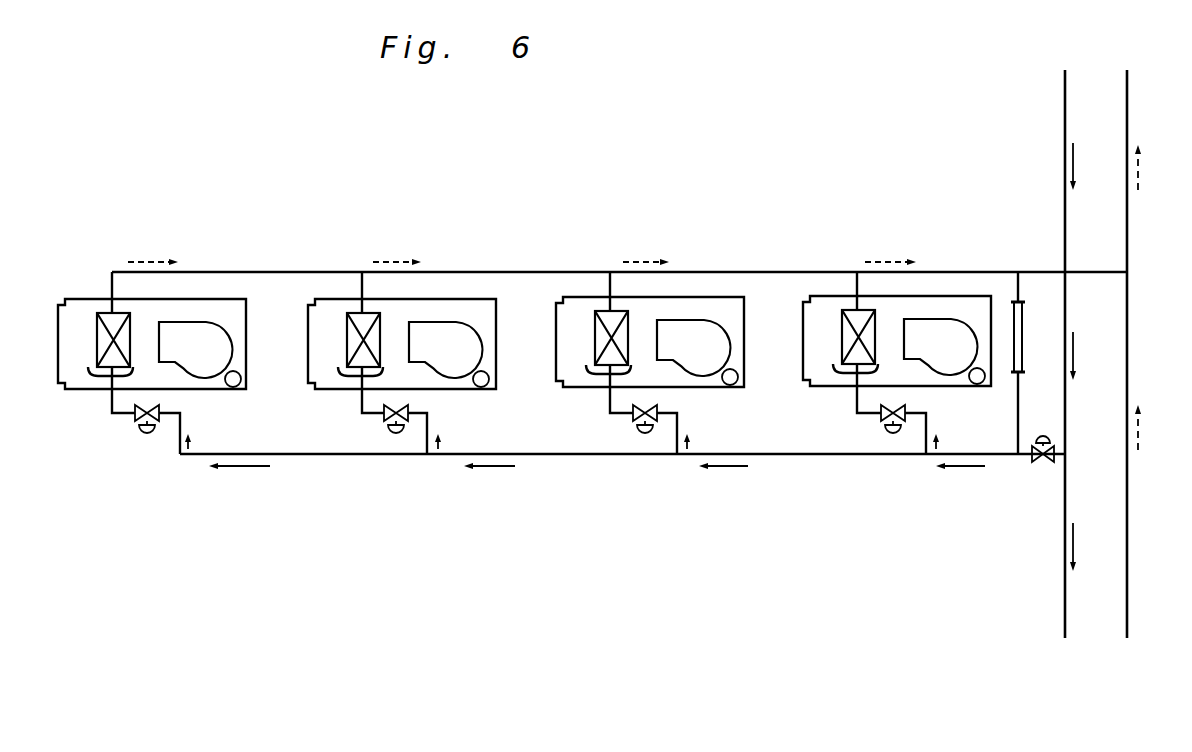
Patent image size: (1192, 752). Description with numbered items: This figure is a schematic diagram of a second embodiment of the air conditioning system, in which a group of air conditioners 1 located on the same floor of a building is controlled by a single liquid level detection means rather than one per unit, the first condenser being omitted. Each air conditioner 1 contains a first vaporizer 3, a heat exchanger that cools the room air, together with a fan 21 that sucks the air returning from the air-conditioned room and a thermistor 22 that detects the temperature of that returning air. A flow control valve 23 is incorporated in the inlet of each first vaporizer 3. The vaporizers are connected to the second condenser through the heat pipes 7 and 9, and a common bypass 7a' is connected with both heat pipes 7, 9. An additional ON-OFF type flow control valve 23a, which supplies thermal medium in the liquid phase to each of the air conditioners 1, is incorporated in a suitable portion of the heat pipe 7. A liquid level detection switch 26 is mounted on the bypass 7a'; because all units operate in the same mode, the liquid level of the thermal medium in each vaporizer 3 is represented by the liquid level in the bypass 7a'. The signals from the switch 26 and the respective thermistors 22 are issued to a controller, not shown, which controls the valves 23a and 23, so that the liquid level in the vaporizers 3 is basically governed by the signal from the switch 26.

The air conditioner 1 is at (200, 299).
The first vaporizer 3 is at (97, 327).
The fan 21 is at (230, 335).
The thermistor 22 is at (241, 379).
The flow control valve 23 is at (146, 433).
The ON-OFF type flow control valve 23a is at (1036, 460).
The liquid level detection switch 26 is at (1025, 313).
The heat pipe 7 is at (1066, 490).
The common bypass 7a' is at (1012, 332).
The heat pipe 9 is at (1128, 355).